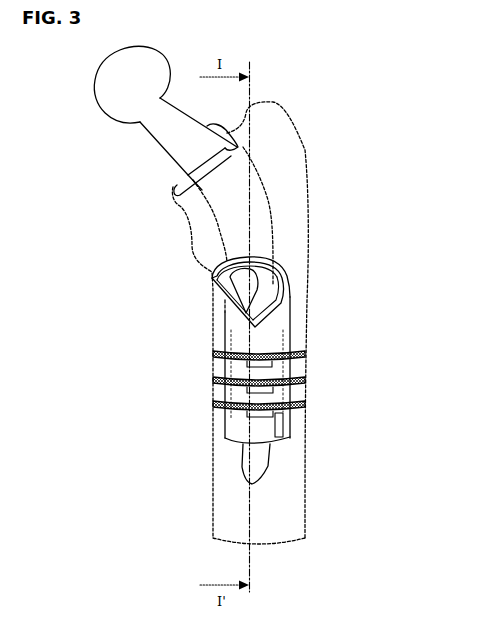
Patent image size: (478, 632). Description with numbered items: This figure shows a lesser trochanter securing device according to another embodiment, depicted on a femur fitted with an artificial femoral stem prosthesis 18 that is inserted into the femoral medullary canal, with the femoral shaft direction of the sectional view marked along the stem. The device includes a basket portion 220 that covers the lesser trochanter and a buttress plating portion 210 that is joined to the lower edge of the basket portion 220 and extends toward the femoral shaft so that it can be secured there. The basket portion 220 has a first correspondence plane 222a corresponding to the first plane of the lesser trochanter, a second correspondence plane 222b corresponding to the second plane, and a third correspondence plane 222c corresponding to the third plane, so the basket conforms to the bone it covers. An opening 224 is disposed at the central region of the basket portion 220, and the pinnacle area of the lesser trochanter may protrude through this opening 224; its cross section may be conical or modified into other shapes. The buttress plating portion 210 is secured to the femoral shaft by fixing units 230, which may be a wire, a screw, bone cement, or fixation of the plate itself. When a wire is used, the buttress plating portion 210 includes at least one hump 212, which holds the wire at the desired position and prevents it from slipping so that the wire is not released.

The artificial femoral stem prosthesis 18 is at (268, 467).
The buttress plating portion 210 is at (290, 442).
The hump 212 is at (284, 416).
The basket portion 220 is at (268, 273).
The first correspondence plane 222a is at (278, 297).
The second correspondence plane 222b is at (224, 313).
The third correspondence plane 222c is at (236, 256).
The opening 224 is at (222, 293).
The fixing unit 230 is at (293, 362).